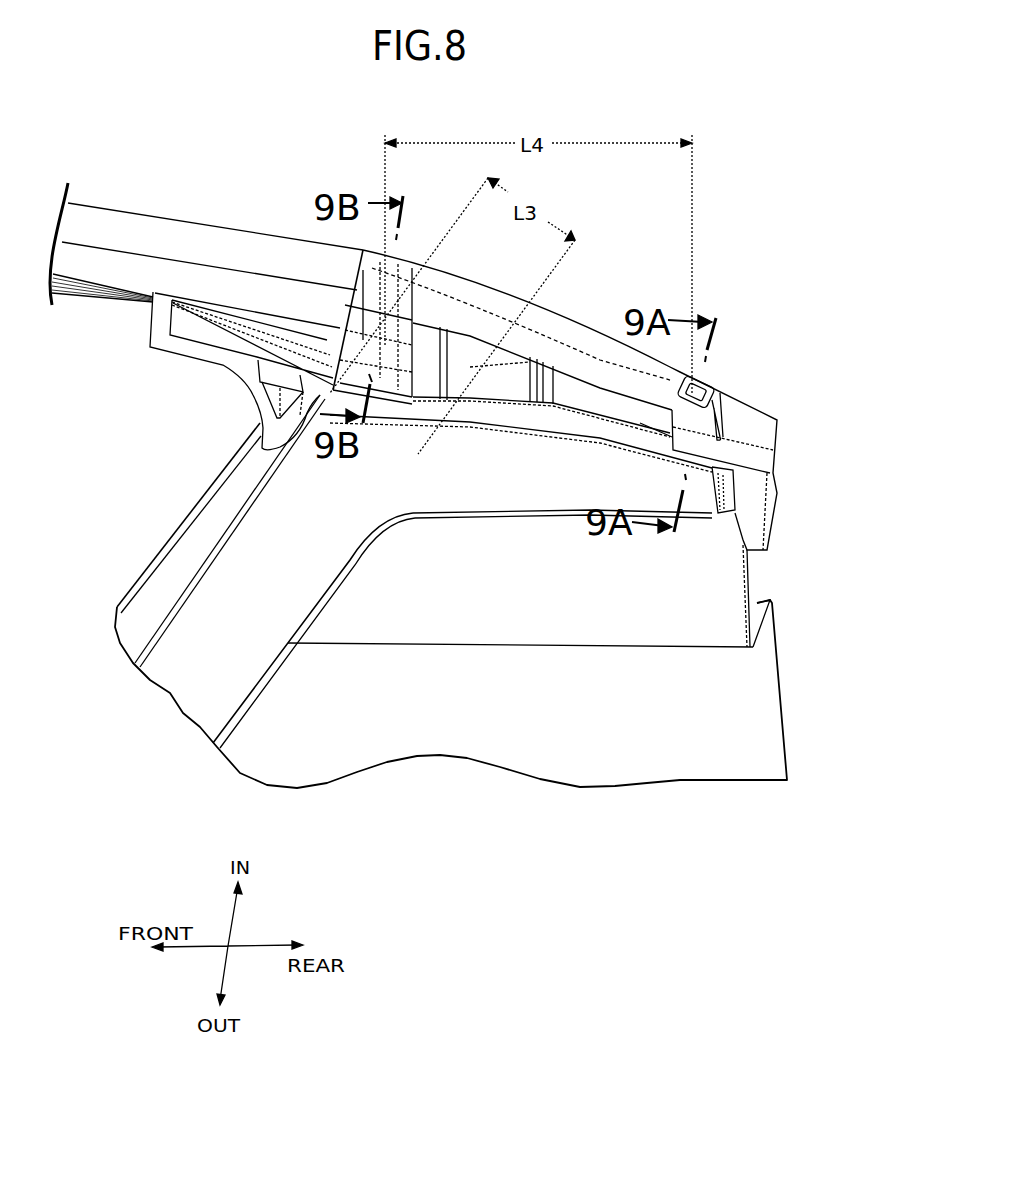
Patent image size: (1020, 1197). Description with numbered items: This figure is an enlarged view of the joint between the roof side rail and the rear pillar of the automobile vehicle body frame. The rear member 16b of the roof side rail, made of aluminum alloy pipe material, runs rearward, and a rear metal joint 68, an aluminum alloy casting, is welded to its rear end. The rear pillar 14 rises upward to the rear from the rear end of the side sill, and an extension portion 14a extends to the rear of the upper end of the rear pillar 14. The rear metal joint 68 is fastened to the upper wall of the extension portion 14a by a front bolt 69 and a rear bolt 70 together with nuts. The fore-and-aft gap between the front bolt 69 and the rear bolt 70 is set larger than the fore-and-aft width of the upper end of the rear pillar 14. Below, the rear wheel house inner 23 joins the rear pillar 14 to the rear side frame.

The rear member 16b is at (172, 230).
The rear metal joint 68 is at (473, 283).
The front bolt 69 is at (391, 375).
The rear bolt 70 is at (703, 390).
The rear pillar 14 is at (170, 527).
The extension portion 14a is at (497, 487).
The rear wheel house inner 23 is at (633, 760).